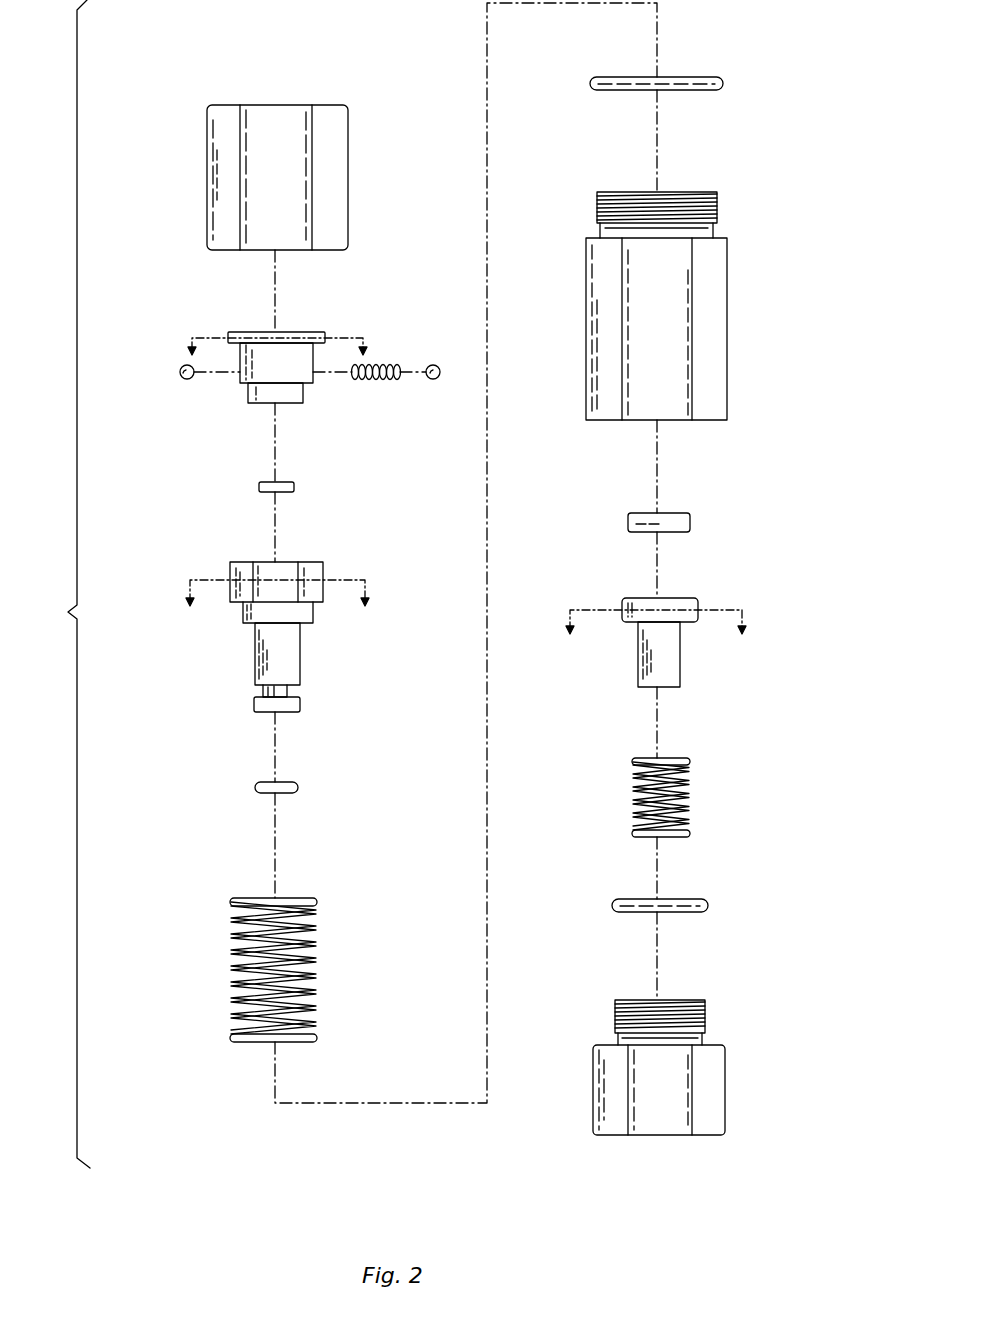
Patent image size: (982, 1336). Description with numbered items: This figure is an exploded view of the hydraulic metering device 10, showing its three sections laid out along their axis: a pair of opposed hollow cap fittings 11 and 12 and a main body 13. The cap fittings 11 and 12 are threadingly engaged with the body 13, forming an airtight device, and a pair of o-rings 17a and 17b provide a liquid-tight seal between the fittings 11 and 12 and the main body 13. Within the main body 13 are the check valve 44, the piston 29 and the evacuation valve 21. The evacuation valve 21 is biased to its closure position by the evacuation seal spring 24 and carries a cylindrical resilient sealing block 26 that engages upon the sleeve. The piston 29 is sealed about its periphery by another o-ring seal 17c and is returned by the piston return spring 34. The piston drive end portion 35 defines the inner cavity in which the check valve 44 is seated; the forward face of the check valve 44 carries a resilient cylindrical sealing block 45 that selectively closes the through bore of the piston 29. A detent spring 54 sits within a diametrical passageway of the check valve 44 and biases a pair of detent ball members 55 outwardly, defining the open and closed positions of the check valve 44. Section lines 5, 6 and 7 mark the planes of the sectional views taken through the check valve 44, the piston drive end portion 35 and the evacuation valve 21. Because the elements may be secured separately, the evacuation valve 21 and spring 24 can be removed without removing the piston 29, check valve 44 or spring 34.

The hydraulic metering device 10 is at (63, 584).
The hollow cap fitting 11 is at (258, 170).
The hollow cap fitting 12 is at (726, 1092).
The main body 13 is at (728, 366).
The o-ring 17a is at (724, 86).
The o-ring 17b is at (710, 905).
The o-ring seal 17c is at (258, 789).
The evacuation valve 21 is at (681, 672).
The evacuation seal spring 24 is at (692, 810).
The cylindrical resilient sealing block 26 is at (692, 528).
The piston 29 is at (257, 666).
The piston return spring 34 is at (240, 969).
The piston drive end portion 35 is at (232, 567).
The check valve 44 is at (272, 357).
The resilient cylindrical sealing block 45 is at (262, 487).
The detent spring 54 is at (380, 382).
The detent ball members 55 is at (190, 380).
The section line 5- 5 is at (276, 340).
The section line 6- 6 is at (277, 588).
The section line 7- 7 is at (655, 616).